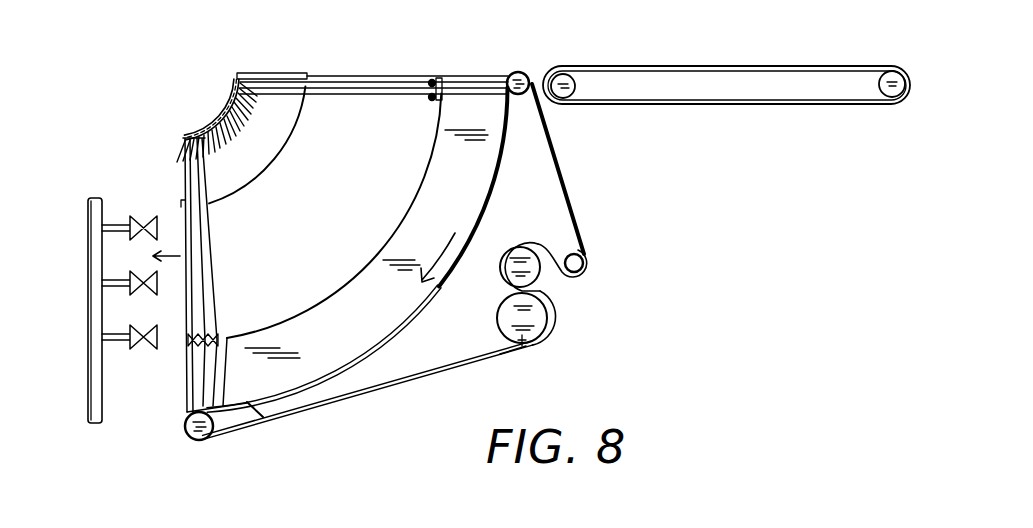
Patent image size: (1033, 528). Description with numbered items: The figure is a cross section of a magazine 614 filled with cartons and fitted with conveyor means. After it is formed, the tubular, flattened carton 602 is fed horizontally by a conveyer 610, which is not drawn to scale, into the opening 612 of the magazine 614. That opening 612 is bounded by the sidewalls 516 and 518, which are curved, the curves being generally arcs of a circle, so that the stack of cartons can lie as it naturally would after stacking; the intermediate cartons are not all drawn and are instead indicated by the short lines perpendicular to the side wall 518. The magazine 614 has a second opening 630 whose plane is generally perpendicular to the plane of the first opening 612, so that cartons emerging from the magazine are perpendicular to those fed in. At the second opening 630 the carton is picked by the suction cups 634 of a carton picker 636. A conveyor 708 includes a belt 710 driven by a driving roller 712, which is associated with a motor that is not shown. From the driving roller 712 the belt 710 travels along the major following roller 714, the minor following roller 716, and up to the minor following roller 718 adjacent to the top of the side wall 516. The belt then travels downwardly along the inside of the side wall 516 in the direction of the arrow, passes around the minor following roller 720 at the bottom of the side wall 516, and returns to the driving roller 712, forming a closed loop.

The sidewall 516 is at (481, 218).
The sidewall 518 is at (226, 118).
The tubular flattened carton 602 is at (394, 80).
The conveyer 610 is at (690, 122).
The opening 612 is at (348, 62).
The magazine 614 is at (414, 345).
The second opening 630 is at (150, 412).
The suction cups 634 is at (160, 213).
The carton picker 636 is at (85, 417).
The conveyor 708 is at (502, 364).
The belt 710 is at (374, 388).
The driving roller 712 is at (530, 344).
The major following roller 714 is at (525, 275).
The minor following roller 716 is at (586, 262).
The minor following roller 718 is at (518, 72).
The minor following roller 720 is at (210, 432).